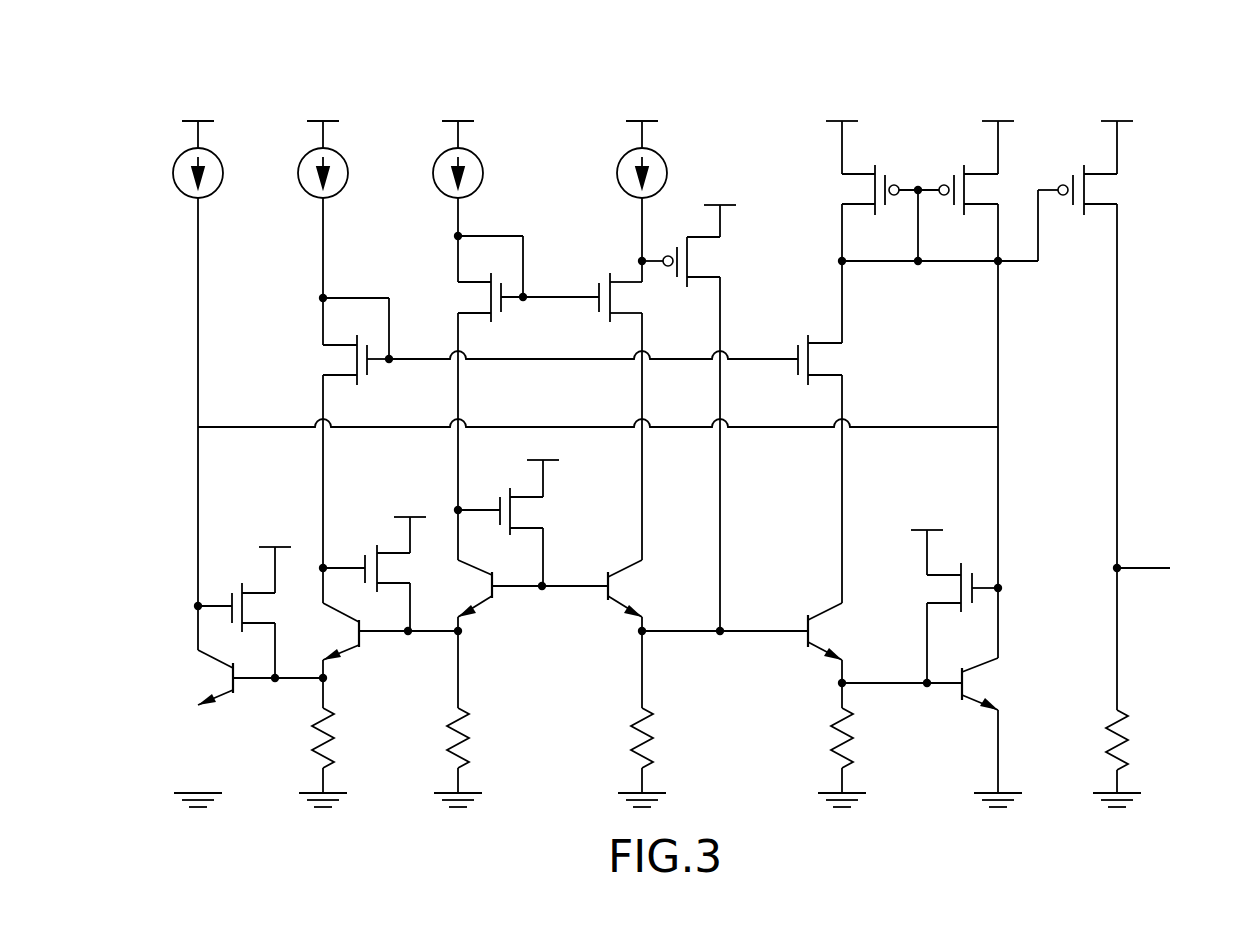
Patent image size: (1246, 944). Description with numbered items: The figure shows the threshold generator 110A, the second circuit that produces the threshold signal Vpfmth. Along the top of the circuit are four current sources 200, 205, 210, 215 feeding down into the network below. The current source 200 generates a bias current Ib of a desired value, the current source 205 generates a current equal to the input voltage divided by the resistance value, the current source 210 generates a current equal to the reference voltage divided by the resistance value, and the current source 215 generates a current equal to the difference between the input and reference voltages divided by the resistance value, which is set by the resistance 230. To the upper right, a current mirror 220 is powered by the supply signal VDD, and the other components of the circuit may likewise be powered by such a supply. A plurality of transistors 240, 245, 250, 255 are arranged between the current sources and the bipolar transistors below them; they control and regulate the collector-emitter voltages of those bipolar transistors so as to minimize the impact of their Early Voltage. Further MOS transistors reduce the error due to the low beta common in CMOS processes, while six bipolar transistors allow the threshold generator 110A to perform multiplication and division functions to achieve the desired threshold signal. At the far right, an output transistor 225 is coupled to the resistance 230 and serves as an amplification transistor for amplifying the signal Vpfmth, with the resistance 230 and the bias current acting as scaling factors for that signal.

The threshold generator 110A is at (1080, 66).
The current source 200 is at (220, 152).
The current source 205 is at (345, 152).
The current source 210 is at (478, 152).
The current source 215 is at (662, 152).
The current mirror 220 is at (940, 128).
The output transistor 225 is at (1100, 190).
The resistance 230 is at (1155, 713).
The transistor 240 is at (340, 361).
The transistor 245 is at (470, 295).
The transistor 250 is at (616, 281).
The transistor 255 is at (825, 358).